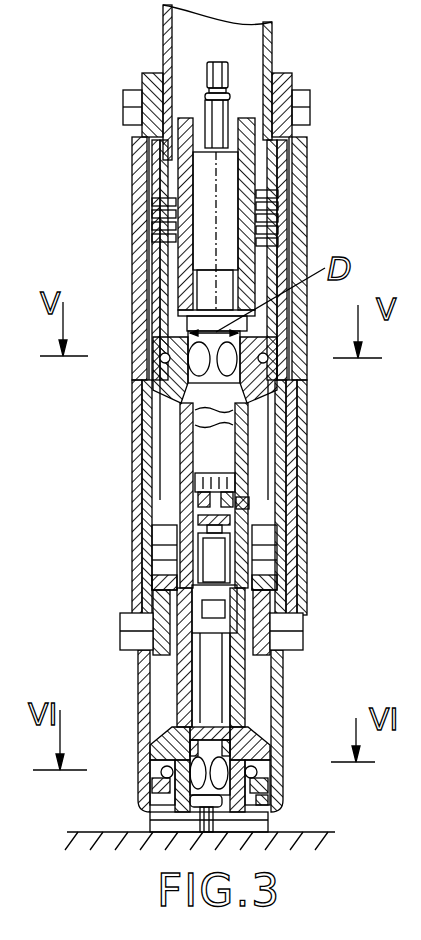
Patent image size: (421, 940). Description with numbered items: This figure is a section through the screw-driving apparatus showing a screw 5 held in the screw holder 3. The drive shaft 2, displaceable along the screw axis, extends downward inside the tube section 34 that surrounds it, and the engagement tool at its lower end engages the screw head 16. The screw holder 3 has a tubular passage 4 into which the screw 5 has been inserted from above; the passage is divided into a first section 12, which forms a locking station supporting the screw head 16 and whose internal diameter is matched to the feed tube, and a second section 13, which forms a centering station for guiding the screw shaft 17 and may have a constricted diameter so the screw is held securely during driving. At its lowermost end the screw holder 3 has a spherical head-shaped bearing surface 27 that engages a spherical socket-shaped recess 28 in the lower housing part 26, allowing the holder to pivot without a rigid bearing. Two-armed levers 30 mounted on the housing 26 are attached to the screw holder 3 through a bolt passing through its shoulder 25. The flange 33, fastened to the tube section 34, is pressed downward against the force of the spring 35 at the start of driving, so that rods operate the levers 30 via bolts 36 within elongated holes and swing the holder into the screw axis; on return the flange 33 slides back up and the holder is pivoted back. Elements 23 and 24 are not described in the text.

The drive shaft 2 is at (222, 171).
The screw holder 3 is at (182, 476).
The tubular passage 4 is at (203, 435).
The screw 5 is at (221, 498).
The first section 12 is at (222, 356).
The second section 13 is at (224, 767).
The screw head 16 is at (222, 475).
The screw shaft 17 is at (217, 685).
The valve body 23 is at (165, 362).
The base body 24 is at (165, 758).
The shoulder 25 is at (248, 502).
The lower housing part 26 is at (284, 780).
The bearing surface 27 is at (243, 820).
The socket-shaped recess 28 is at (173, 795).
The two-armed lever 30 is at (165, 553).
The flange 33 is at (293, 75).
The tube section 34 is at (162, 39).
The spring 35 is at (158, 246).
The bolt 36 is at (137, 628).